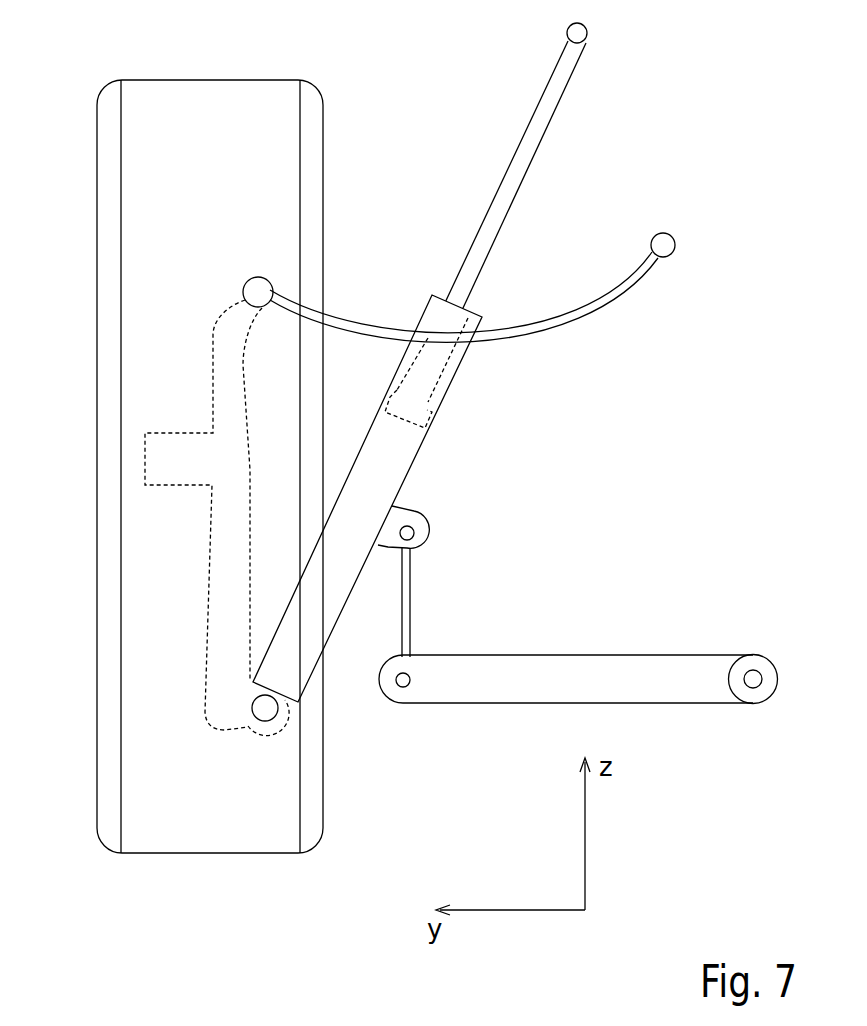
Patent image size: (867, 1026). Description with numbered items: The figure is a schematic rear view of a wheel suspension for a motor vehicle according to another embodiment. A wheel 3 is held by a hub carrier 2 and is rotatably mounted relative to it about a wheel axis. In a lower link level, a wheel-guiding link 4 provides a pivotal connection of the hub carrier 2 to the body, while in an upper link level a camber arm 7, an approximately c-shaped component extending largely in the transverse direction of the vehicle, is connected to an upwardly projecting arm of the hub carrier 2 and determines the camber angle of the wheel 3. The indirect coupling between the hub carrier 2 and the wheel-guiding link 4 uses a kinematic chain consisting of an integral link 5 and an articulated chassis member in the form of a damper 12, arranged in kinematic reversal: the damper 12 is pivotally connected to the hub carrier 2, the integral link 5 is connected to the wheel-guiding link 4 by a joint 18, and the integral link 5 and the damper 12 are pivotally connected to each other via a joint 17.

The hub carrier 2 is at (228, 545).
The wheel 3 is at (158, 228).
The wheel-guiding link 4 is at (678, 682).
The integral link 5 is at (410, 603).
The camber arm 7 is at (617, 293).
The damper 12 is at (397, 452).
The joint 17 is at (422, 530).
The joint 18 is at (407, 682).